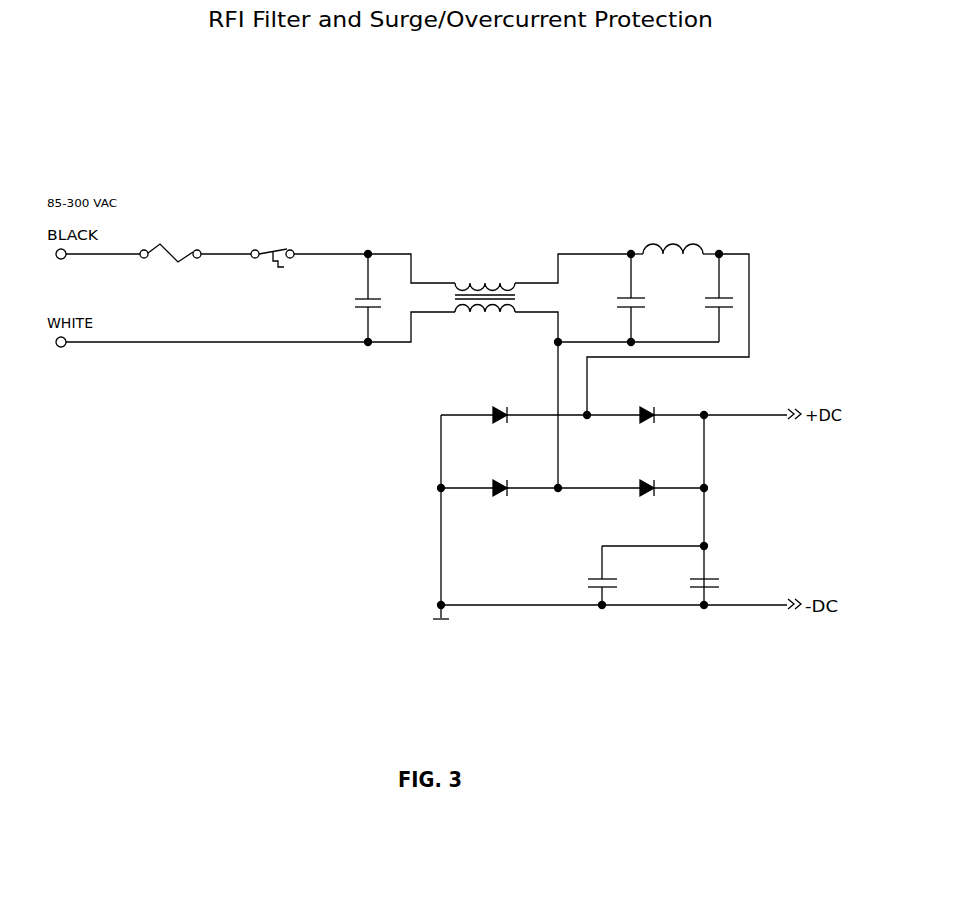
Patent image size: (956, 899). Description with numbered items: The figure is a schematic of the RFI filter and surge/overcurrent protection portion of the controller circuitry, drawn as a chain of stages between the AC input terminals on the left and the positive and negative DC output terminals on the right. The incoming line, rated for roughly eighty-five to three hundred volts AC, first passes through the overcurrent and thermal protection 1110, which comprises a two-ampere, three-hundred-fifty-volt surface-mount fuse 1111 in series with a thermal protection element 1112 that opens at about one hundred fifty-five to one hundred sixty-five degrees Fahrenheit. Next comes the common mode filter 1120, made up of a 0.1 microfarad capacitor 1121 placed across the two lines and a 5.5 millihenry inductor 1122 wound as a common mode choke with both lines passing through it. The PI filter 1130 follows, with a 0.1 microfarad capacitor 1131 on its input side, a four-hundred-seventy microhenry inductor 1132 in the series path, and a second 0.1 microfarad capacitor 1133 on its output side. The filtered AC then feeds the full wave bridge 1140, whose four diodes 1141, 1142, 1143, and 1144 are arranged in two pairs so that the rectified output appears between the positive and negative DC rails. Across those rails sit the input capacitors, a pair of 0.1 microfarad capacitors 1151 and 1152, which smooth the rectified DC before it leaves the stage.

The overcurrent and thermal protection 1110 is at (254, 227).
The fuse 1111 is at (170, 265).
The thermal protection element 1112 is at (272, 268).
The common mode filter 1120 is at (470, 264).
The capacitor 1121 is at (345, 298).
The inductor 1122 is at (486, 283).
The PI filter 1130 is at (661, 299).
The capacitor 1131 is at (609, 298).
The inductor 1132 is at (675, 265).
The capacitor 1133 is at (697, 297).
The full wave bridge 1140 is at (534, 487).
The diode 1141 is at (500, 397).
The diode 1142 is at (500, 470).
The diode 1143 is at (647, 397).
The diode 1144 is at (647, 470).
The capacitor 1151 is at (580, 577).
The capacitor 1152 is at (683, 593).